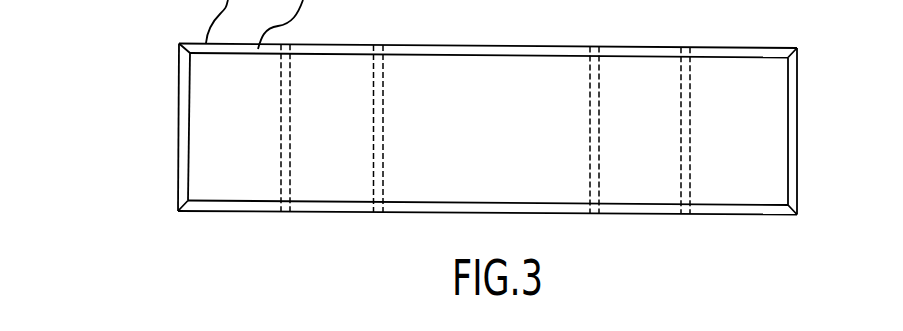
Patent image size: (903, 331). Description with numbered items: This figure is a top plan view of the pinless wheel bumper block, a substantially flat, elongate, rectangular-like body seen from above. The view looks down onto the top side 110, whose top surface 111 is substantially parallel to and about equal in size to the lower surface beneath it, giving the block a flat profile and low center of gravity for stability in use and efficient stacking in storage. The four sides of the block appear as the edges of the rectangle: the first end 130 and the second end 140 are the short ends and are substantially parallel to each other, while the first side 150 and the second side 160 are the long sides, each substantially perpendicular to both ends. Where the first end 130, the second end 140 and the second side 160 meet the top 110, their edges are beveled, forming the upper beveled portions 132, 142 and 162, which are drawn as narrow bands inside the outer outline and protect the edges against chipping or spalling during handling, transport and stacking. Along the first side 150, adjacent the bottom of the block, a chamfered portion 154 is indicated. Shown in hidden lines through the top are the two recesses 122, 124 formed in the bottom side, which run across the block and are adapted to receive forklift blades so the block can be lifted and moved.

The top side 110 is at (482, 143).
The top surface 111 is at (562, 67).
The recess 122 is at (329, 187).
The recess 124 is at (643, 167).
The first end 130 is at (178, 172).
The upper beveled portion 132 is at (187, 89).
The second end 140 is at (798, 153).
The upper beveled portion 142 is at (792, 113).
The first side 150 is at (333, 330).
The chamfered portion 154 is at (560, 330).
The second side 160 is at (687, 213).
The upper beveled portion 162 is at (768, 207).